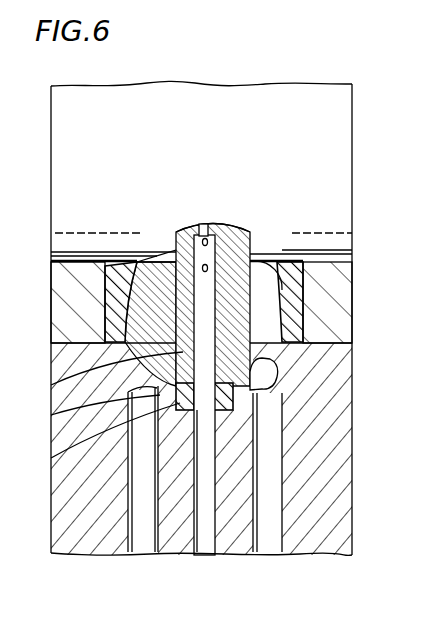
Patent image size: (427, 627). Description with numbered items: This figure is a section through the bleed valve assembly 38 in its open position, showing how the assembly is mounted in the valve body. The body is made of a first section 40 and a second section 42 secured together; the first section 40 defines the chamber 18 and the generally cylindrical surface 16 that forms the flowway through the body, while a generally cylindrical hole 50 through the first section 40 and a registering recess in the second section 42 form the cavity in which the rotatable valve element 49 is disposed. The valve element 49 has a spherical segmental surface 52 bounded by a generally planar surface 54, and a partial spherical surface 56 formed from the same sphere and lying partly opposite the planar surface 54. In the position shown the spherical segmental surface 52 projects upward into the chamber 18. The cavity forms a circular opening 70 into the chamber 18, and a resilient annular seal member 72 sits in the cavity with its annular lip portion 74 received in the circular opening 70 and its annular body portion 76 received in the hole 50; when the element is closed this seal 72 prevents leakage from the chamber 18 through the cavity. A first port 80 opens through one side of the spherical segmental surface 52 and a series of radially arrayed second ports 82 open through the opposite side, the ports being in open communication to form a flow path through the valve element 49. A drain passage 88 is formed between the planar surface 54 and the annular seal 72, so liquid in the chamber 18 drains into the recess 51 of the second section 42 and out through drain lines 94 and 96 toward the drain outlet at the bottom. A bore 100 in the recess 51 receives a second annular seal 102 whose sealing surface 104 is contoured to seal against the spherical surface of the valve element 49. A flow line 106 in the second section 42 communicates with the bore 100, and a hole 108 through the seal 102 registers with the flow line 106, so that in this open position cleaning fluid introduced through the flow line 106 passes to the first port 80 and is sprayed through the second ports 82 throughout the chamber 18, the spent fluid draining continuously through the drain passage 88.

The generally cylindrical surface 16 is at (65, 260).
The chamber 18 is at (201, 126).
The bleed valve assembly 38 is at (180, 218).
The first section 40 is at (60, 300).
The second section 42 is at (65, 490).
The rotatable valve element 49 is at (155, 257).
The generally cylindrical hole 50 is at (270, 298).
The recess 51 is at (267, 377).
The spherical segmental surface 52 is at (232, 222).
The generally planar surface 54 is at (282, 258).
The partial spherical surface 56 is at (65, 345).
The circular opening 70 is at (290, 255).
The annular seal member 72 is at (303, 325).
The annular lip portion 74 is at (133, 261).
The annular body portion 76 is at (300, 308).
The first port 80 is at (67, 381).
The second ports 82 is at (204, 224).
The drain passage 88 is at (273, 257).
The drain line 94 is at (272, 460).
The drain line 96 is at (132, 530).
The bore 100 is at (65, 457).
The second annular seal 102 is at (237, 402).
The sealing surface 104 is at (255, 357).
The flow line 106 is at (197, 533).
The hole 108 is at (58, 415).